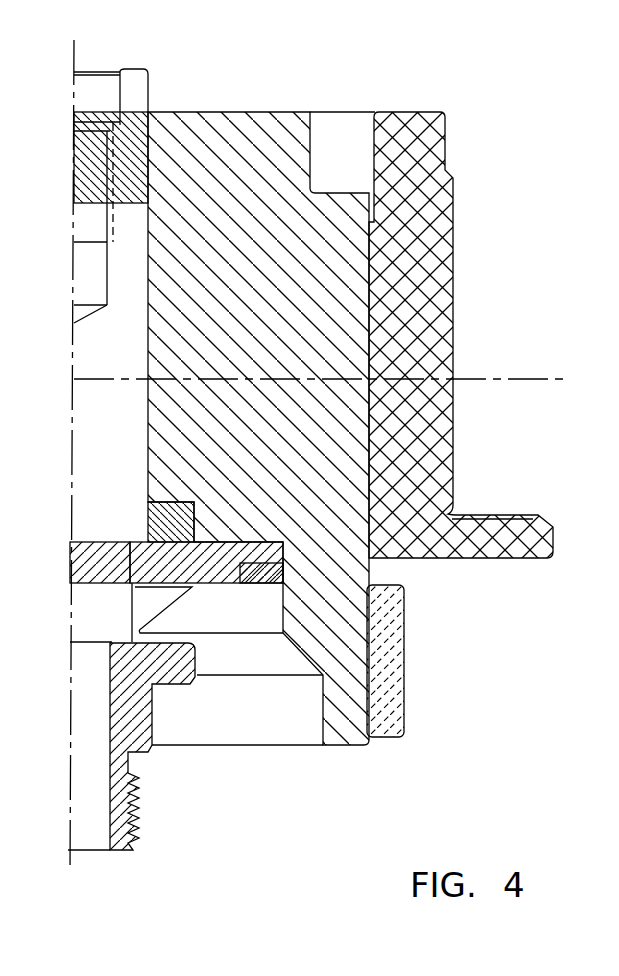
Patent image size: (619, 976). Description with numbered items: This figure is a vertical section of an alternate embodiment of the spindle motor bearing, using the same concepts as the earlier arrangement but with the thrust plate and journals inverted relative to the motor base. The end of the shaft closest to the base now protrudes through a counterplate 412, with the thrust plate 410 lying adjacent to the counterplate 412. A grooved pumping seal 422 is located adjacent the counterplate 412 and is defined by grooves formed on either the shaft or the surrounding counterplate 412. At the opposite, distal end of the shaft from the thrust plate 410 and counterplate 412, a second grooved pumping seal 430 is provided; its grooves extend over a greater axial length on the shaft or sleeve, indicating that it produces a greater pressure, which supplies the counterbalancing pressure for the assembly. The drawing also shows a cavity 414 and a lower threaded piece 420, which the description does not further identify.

The thrust plate 410 is at (193, 515).
The counterplate 412 is at (283, 552).
The cavity chamber 414 is at (253, 656).
The threaded nut 420 is at (197, 718).
The grooved pumping seal 422 is at (103, 583).
The grooved pumping seal 430 is at (125, 147).